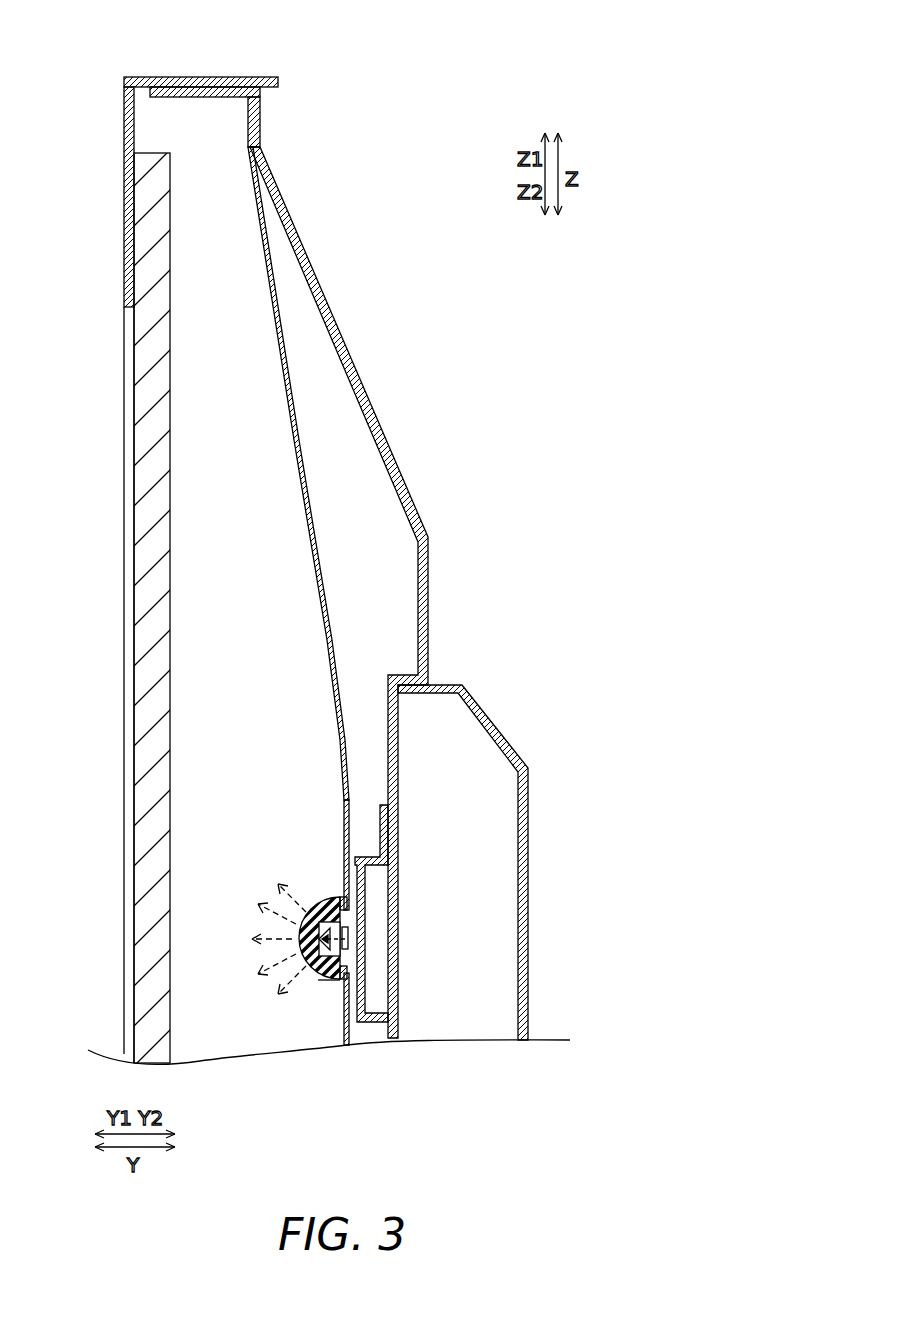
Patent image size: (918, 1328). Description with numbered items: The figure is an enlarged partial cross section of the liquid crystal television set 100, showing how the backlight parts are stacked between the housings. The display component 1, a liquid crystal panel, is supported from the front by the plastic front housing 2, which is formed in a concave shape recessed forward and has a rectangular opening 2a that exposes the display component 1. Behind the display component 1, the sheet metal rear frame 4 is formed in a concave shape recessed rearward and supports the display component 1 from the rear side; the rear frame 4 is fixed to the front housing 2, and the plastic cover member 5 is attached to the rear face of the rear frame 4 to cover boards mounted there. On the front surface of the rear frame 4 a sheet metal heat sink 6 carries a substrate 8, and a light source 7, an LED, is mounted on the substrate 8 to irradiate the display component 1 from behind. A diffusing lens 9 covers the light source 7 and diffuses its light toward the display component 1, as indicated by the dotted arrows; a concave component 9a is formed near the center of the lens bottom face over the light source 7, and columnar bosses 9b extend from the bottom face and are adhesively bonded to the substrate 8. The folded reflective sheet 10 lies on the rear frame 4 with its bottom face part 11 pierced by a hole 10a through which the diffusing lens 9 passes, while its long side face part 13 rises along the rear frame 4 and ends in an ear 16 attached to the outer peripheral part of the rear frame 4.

The liquid crystal television set 100 is at (352, 40).
The display component 1 is at (145, 402).
The front housing 2 is at (187, 538).
The rectangular opening 2a is at (133, 307).
The ears 16 is at (258, 125).
The rear frame 4 is at (318, 282).
The long side face parts 13 is at (308, 498).
The reflective sheet 10 is at (405, 870).
The bottom face part 11 is at (350, 798).
The holes 10a is at (349, 977).
The cover member 5 is at (470, 708).
The heat sinks 6 is at (383, 843).
The light sources 7 is at (332, 940).
The substrates 8 is at (348, 932).
The diffusing lenses 9 is at (318, 983).
The concave components 9a is at (330, 980).
The columnar bosses 9b is at (343, 910).